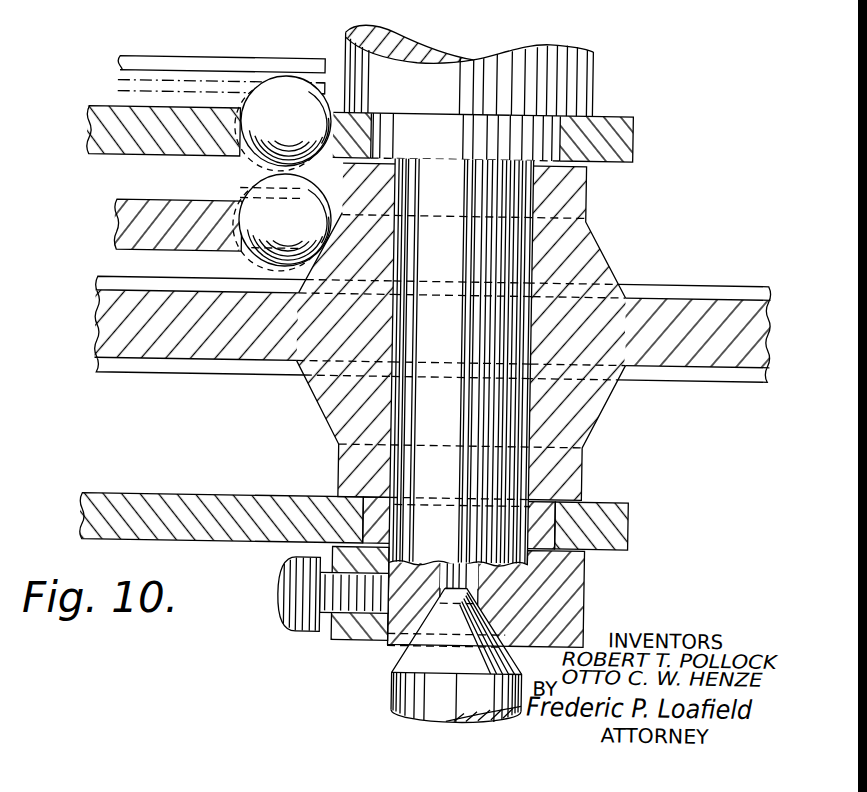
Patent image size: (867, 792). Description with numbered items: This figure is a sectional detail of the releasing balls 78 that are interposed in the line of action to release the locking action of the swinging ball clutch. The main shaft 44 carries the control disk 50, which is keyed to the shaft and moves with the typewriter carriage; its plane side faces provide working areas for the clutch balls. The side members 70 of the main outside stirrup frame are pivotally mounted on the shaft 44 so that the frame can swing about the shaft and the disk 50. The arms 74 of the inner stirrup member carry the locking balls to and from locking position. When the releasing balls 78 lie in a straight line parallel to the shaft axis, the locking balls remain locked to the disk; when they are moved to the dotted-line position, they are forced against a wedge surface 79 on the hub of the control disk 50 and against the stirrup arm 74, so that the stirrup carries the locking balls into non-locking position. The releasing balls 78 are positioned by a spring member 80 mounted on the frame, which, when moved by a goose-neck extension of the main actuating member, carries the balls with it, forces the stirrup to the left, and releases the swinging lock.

The shaft 44 is at (581, 76).
The control disk 50 is at (105, 331).
The side members 70 is at (85, 134).
The arms 74 is at (138, 230).
The releasing balls 78 is at (282, 173).
The wedge surface 79 is at (607, 262).
The spring member 80 is at (191, 86).